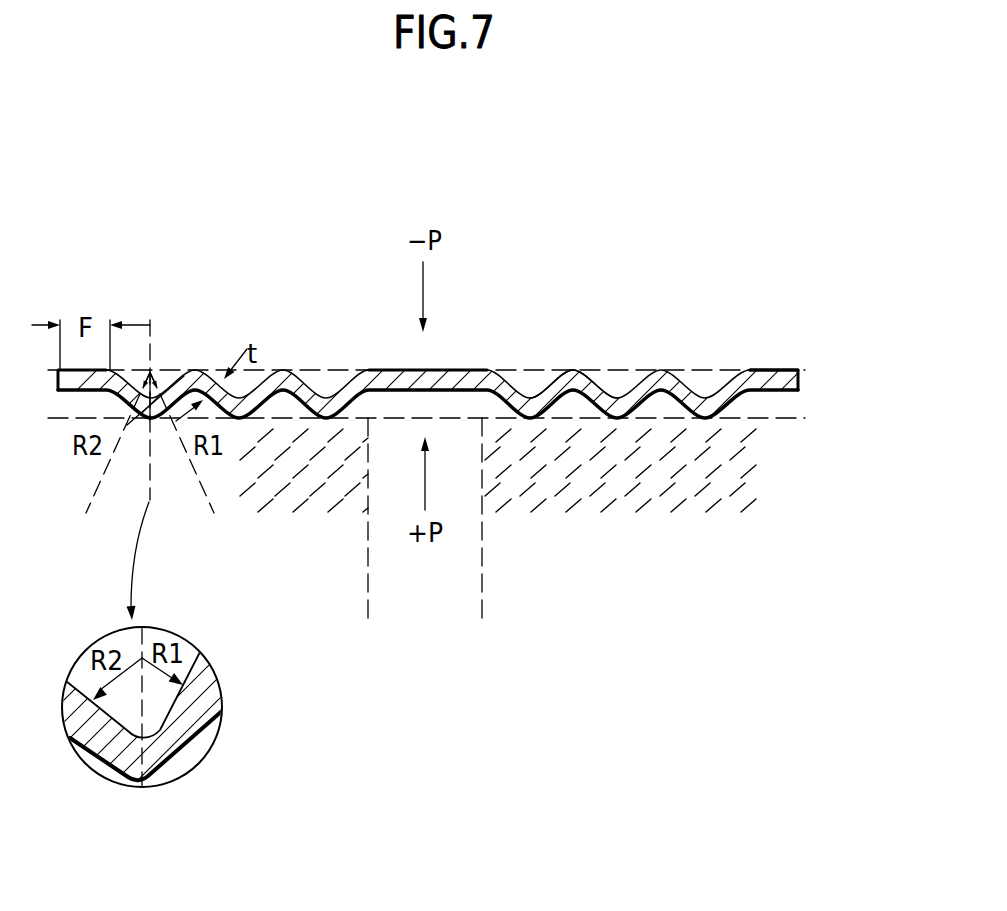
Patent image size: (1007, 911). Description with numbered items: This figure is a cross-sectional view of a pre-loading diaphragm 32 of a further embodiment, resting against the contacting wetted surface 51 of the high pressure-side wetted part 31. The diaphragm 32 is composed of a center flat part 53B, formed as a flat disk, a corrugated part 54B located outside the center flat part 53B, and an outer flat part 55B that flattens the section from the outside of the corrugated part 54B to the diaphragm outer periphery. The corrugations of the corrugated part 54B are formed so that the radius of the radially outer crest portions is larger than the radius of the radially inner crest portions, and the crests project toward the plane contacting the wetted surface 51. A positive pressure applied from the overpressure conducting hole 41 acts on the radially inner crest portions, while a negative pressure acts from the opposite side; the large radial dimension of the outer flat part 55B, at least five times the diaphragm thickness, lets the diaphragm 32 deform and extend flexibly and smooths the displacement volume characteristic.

The high pressure-side pre-loading diaphragm 32 is at (582, 172).
The high pressure-side wetted part 31 is at (622, 478).
The high pressure-side overpressure conducting hole 41 is at (470, 582).
The contacting wetted surface 51 is at (733, 412).
The center flat part 53B is at (473, 370).
The corrugated part 54B is at (577, 370).
The outer flat part 55B is at (766, 370).